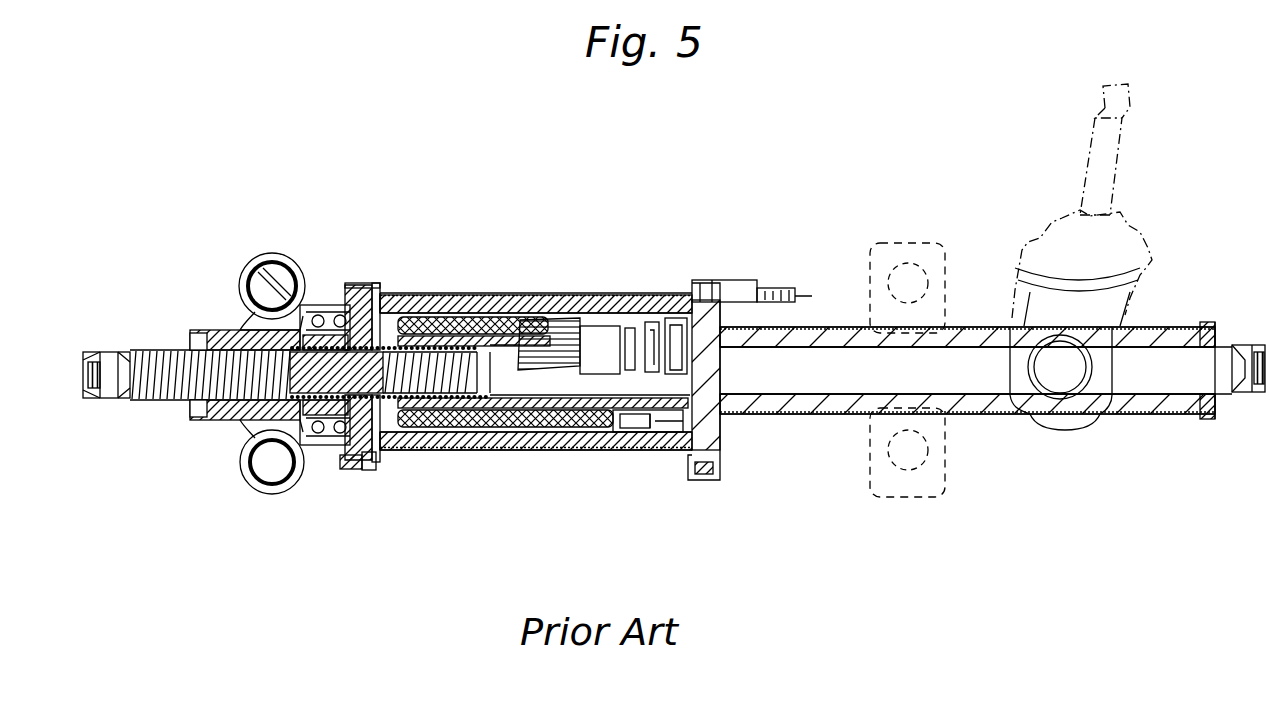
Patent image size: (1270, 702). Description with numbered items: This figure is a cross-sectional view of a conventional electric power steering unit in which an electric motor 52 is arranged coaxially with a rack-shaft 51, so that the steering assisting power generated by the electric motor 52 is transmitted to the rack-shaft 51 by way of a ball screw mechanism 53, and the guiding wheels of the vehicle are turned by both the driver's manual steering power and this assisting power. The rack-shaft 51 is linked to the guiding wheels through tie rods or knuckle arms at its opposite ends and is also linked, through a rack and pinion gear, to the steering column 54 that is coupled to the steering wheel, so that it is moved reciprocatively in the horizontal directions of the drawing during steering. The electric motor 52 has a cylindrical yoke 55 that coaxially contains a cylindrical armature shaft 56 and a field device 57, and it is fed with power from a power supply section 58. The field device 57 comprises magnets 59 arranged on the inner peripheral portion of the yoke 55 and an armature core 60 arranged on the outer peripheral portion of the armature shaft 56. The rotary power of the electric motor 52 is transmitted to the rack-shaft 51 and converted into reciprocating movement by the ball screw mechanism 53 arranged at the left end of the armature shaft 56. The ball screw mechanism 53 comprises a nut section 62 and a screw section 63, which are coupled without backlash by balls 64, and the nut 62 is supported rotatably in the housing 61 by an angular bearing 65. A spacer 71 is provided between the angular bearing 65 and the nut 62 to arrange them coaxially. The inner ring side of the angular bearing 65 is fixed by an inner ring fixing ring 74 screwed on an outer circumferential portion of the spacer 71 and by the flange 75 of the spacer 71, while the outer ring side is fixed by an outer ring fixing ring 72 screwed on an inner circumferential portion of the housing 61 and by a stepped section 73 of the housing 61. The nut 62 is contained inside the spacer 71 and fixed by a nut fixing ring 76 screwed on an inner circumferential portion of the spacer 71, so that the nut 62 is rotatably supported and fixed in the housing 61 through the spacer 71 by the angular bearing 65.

The rack-shaft 51 is at (852, 362).
The electric motor 52 is at (445, 293).
The ball screw mechanism 53 is at (332, 425).
The steering column 54 is at (1090, 152).
The cylindrical yoke 55 is at (570, 448).
The cylindrical armature shaft 56 is at (545, 450).
The field device 57 is at (510, 300).
The power supply section 58 is at (641, 440).
The magnets 59 is at (505, 452).
The armature core 60 is at (530, 312).
The housing 61 is at (207, 336).
The nut section 62 is at (320, 428).
The screw section 63 is at (210, 412).
The balls 64 is at (346, 462).
The angular bearing 65 is at (330, 290).
The spacer 71 is at (254, 302).
The outer ring fixing ring 72 is at (360, 288).
The stepped section 73 is at (278, 270).
The inner ring fixing ring 74 is at (363, 289).
The flange 75 is at (260, 262).
The nut fixing ring 76 is at (364, 294).